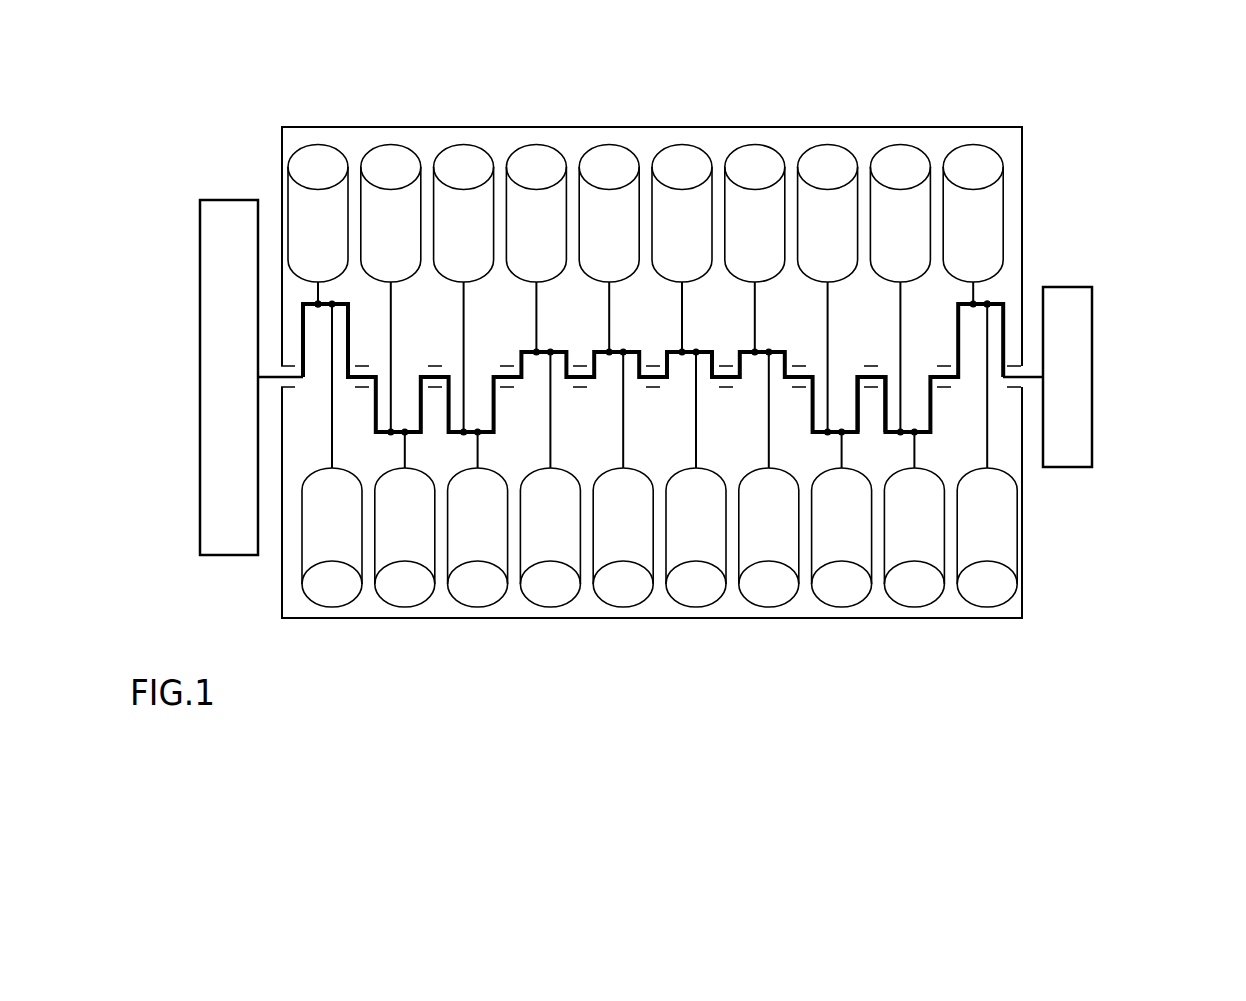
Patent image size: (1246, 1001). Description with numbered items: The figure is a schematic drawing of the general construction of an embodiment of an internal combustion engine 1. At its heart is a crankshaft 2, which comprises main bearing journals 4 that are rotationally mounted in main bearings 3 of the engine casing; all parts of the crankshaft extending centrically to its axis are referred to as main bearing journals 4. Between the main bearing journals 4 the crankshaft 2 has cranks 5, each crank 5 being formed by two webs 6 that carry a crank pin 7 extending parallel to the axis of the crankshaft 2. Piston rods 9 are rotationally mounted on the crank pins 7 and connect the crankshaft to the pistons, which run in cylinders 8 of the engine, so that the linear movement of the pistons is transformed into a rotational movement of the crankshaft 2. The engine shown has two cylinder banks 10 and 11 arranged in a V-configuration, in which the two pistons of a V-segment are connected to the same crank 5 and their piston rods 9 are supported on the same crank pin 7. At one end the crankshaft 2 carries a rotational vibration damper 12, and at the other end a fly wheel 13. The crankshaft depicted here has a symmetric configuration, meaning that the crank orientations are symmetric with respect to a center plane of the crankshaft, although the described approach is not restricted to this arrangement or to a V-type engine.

The internal combustion engine 1 is at (845, 127).
The crankshaft 2 is at (938, 420).
The main bearings 3 is at (870, 428).
The main bearing journals 4 is at (845, 449).
The crank 5 is at (966, 318).
The webs 6 is at (349, 334).
The crank pin 7 is at (329, 290).
The cylinders 8 is at (620, 162).
The piston rods 9 is at (538, 317).
The cylinder bank 10 is at (1146, 215).
The cylinder bank 11 is at (1114, 591).
The rotational vibration damper 12 is at (1073, 372).
The fly wheel 13 is at (222, 423).